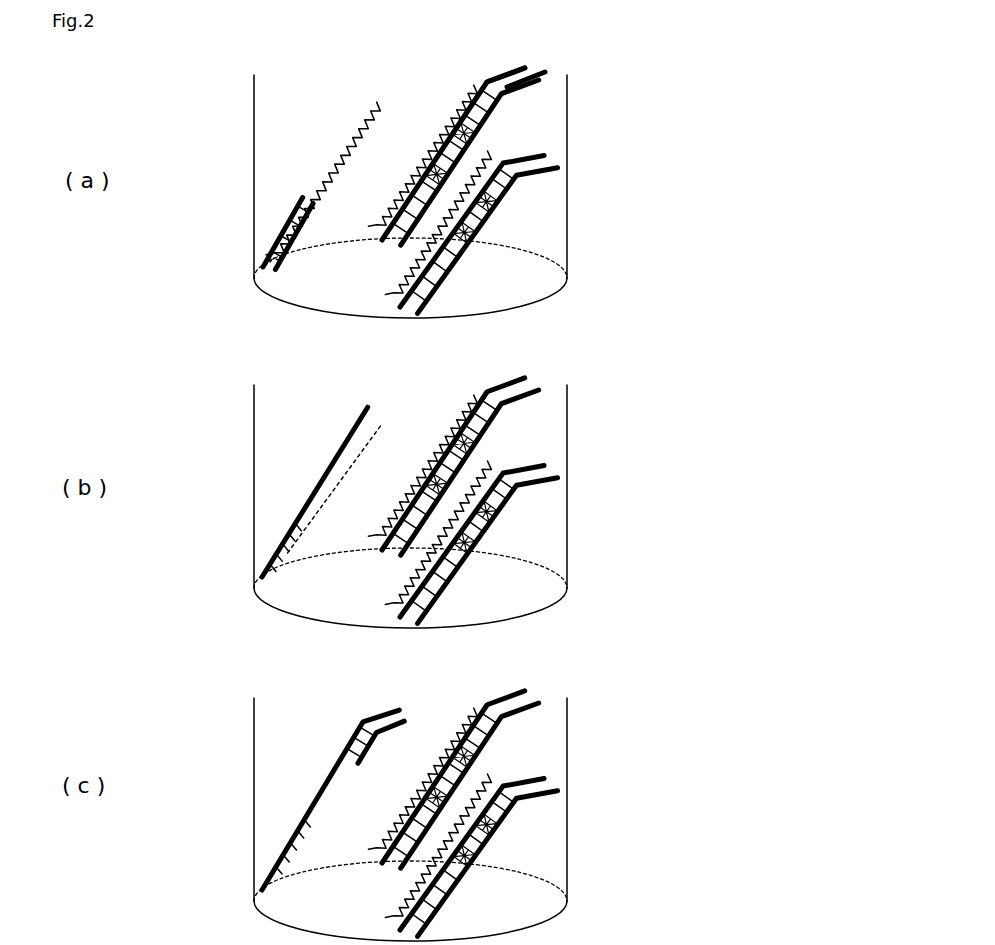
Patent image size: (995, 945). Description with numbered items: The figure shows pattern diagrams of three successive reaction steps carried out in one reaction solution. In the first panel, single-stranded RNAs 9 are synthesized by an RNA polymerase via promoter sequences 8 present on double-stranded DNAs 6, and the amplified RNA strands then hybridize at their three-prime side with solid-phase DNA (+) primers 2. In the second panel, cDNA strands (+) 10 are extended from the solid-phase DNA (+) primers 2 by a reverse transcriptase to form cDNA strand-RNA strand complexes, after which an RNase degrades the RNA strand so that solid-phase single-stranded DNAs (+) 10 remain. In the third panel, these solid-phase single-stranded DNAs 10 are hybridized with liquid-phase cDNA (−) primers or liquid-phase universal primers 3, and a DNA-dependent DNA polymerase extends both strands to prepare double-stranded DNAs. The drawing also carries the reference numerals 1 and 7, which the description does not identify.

The vessel 1 is at (567, 250).
The solid-phase DNA (+) primer 2 is at (287, 214).
The liquid-phase universal primer 3 is at (380, 748).
The double-stranded DNA 6 is at (515, 92).
The second electrode 7 is at (495, 142).
The promoter sequence 8 is at (545, 73).
The single-stranded RNA 9 is at (458, 127).
The cDNA strand (+) 10 is at (325, 470).